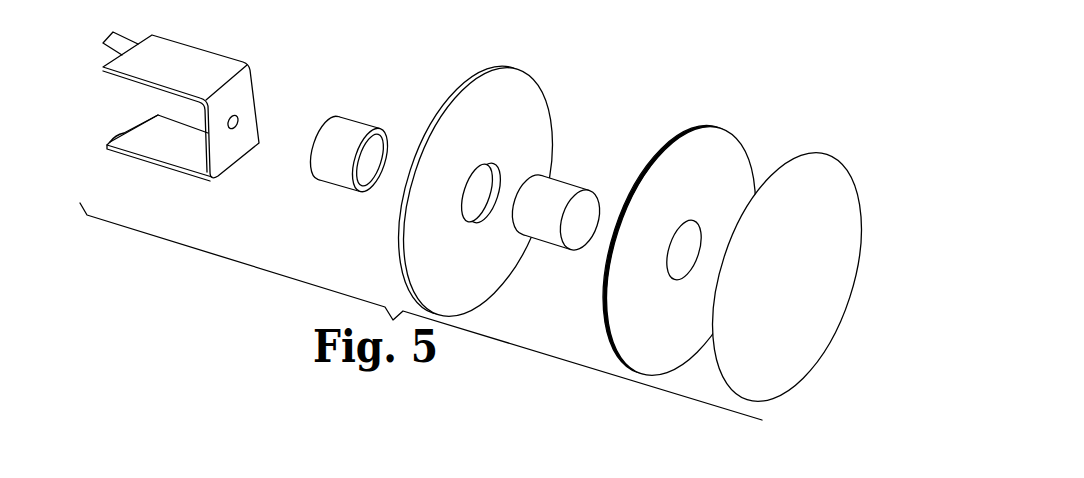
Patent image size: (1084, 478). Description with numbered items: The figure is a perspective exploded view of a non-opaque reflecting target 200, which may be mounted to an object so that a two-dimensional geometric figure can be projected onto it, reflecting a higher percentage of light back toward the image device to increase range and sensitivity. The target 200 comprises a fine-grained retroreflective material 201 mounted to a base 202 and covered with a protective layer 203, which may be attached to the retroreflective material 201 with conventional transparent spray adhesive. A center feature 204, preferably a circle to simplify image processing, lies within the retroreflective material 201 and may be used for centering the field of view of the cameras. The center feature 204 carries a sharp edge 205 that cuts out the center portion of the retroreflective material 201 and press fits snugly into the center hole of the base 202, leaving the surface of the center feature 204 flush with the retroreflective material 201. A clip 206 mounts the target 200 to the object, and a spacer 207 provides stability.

The non-opaque reflecting target 200 is at (868, 131).
The retroreflective material 201 is at (707, 127).
The base 202 is at (510, 66).
The protective layer 203 is at (860, 203).
The center feature 204 is at (582, 232).
The sharp edge 205 is at (572, 188).
The clip 206 is at (178, 53).
The spacer 207 is at (343, 128).